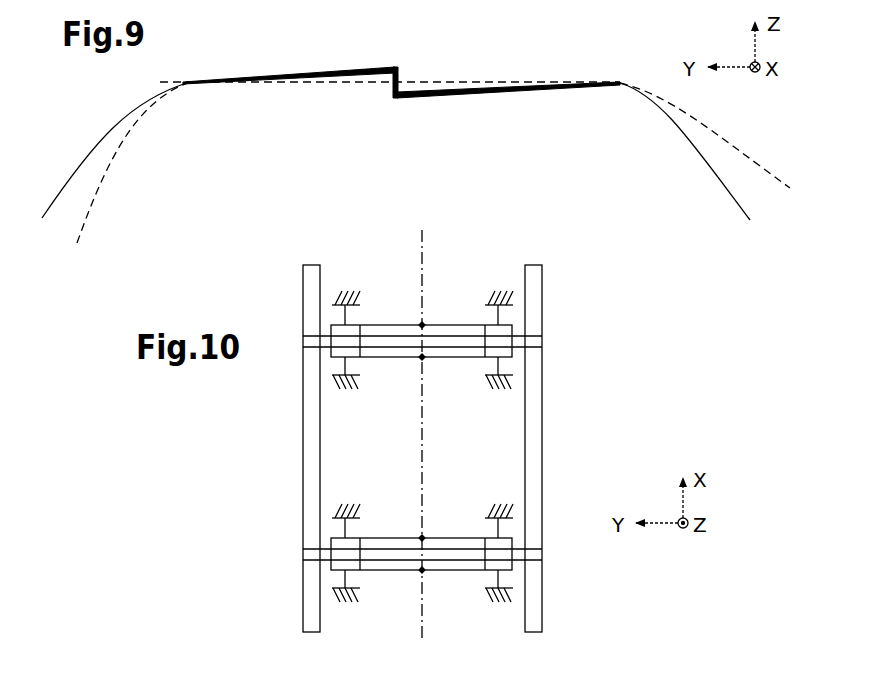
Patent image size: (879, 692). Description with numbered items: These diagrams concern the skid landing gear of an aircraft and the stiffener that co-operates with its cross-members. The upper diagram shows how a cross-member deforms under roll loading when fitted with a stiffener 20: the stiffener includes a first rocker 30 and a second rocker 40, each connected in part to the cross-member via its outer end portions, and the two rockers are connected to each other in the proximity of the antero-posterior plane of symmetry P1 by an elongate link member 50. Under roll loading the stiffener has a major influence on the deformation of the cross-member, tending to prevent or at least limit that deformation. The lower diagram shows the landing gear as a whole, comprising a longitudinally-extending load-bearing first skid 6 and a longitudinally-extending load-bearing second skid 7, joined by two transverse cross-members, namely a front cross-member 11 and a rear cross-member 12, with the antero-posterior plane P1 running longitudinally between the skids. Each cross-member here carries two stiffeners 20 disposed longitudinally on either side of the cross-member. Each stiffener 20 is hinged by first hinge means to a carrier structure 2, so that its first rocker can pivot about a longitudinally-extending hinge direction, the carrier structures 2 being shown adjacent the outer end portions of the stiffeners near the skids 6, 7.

In FIG. 9, the second rocker 40 is at (358, 68).
In FIG. 9, the elongate link member 50 is at (397, 72).
In FIG. 9, the first rocker 30 is at (438, 96).
In FIG. 10, the antero-posterior plane of symmetry P1 is at (423, 233).
In FIG. 10, the second skid 7 is at (302, 449).
In FIG. 10, the first skid 6 is at (543, 428).
In FIG. 10, the stiffener 20 is at (393, 323).
In FIG. 10, the carrier structure 2 is at (345, 292).
In FIG. 10, the rear cross-member 12 is at (453, 374).
In FIG. 10, the front cross-member 11 is at (453, 520).